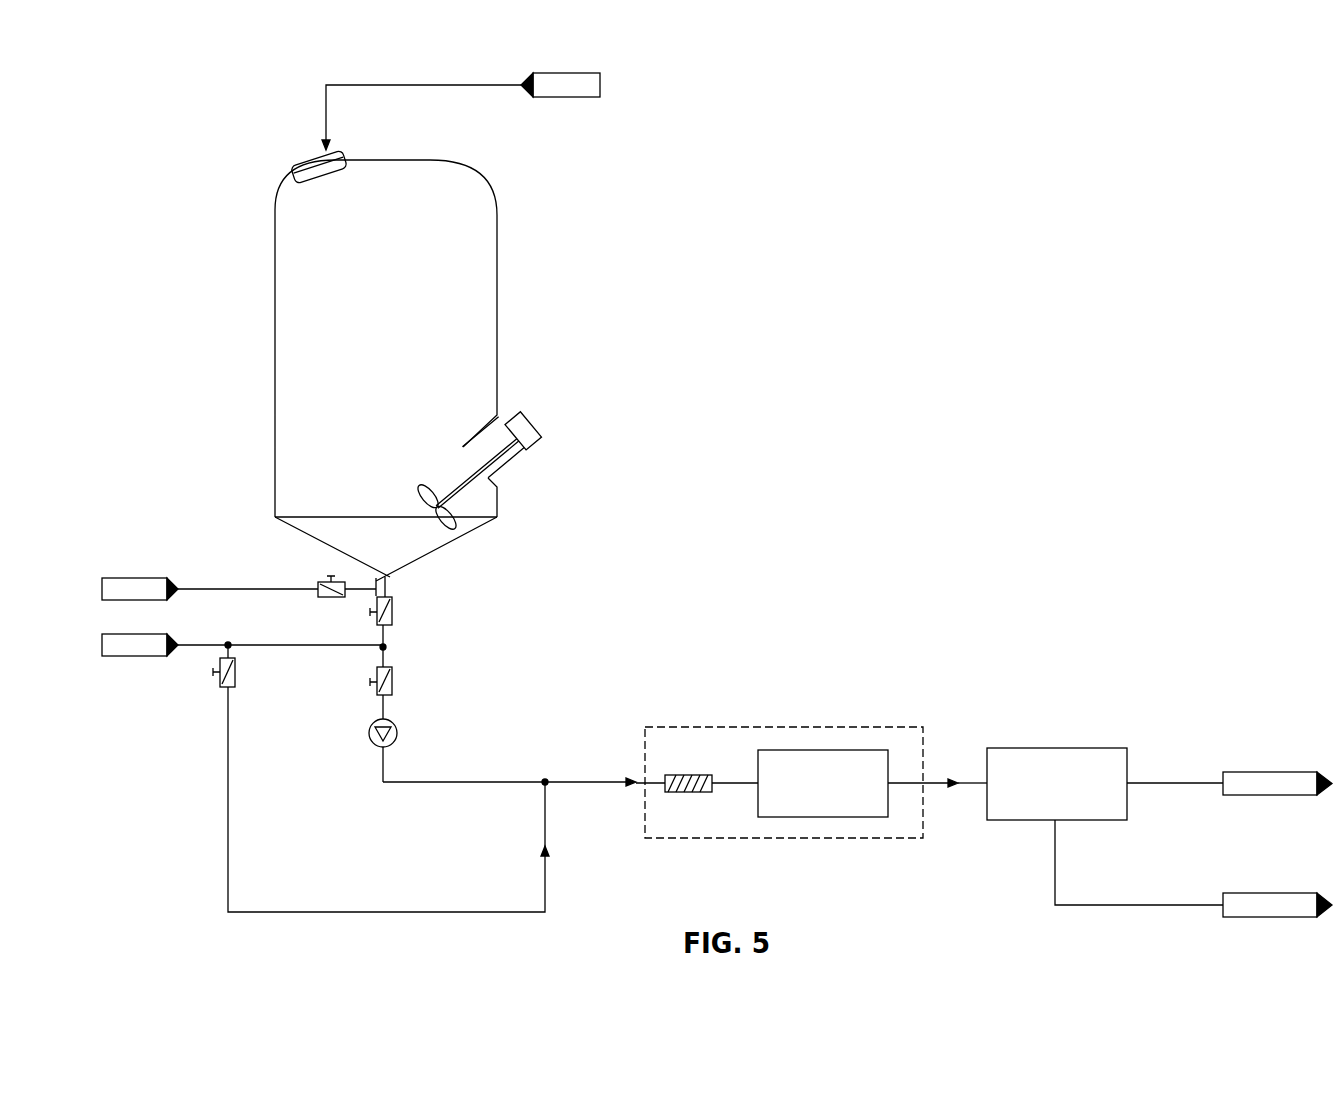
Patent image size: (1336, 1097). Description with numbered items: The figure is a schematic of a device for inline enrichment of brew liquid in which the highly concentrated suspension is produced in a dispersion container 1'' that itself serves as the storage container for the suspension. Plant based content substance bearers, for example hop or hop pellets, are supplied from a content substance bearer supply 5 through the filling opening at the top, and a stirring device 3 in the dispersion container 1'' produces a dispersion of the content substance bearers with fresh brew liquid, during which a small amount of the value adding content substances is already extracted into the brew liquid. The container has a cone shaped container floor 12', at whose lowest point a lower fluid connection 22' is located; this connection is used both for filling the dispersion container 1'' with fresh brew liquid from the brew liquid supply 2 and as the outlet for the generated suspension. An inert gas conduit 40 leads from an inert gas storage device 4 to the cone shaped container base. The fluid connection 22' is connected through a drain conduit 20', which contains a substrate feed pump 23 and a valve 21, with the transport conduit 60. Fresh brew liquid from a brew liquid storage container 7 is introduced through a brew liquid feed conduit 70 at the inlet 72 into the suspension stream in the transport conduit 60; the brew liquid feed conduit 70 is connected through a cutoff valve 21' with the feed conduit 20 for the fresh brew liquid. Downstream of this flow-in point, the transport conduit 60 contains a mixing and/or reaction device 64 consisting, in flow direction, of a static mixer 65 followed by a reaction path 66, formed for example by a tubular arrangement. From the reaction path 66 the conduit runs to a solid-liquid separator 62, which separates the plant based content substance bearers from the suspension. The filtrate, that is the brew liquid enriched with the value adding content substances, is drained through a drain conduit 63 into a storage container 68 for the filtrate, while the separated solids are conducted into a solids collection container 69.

The dispersion container 1'' is at (366, 378).
The content substance bearer supply 5 is at (560, 108).
The stirring device 3 is at (537, 425).
The cone shaped container floor 12' is at (421, 365).
The lower fluid connection 22' is at (445, 591).
The inert gas storage device 4 is at (137, 572).
The inert gas conduit 40 is at (223, 588).
The brew liquid supply 2 is at (140, 662).
The brew liquid storage container 7 is at (122, 634).
The feed conduit for the fresh brew liquid 20 is at (282, 680).
The valve 21 is at (430, 624).
The cutoff valve 21' is at (256, 700).
The drain conduit 20' is at (430, 683).
The substrate feed pump 23 is at (370, 742).
The transport conduit 60 is at (525, 782).
The inlet 72 is at (548, 784).
The brew liquid feed conduit 70 is at (393, 912).
The mixing and/or reaction device 64 is at (811, 731).
The static mixer 65 is at (698, 775).
The reaction path 66 is at (877, 750).
The solid-liquid separator 62 is at (1063, 741).
The drain conduit 63 is at (1166, 780).
The storage container for the filtrate 68 is at (1266, 766).
The solids collection container 69 is at (1266, 887).